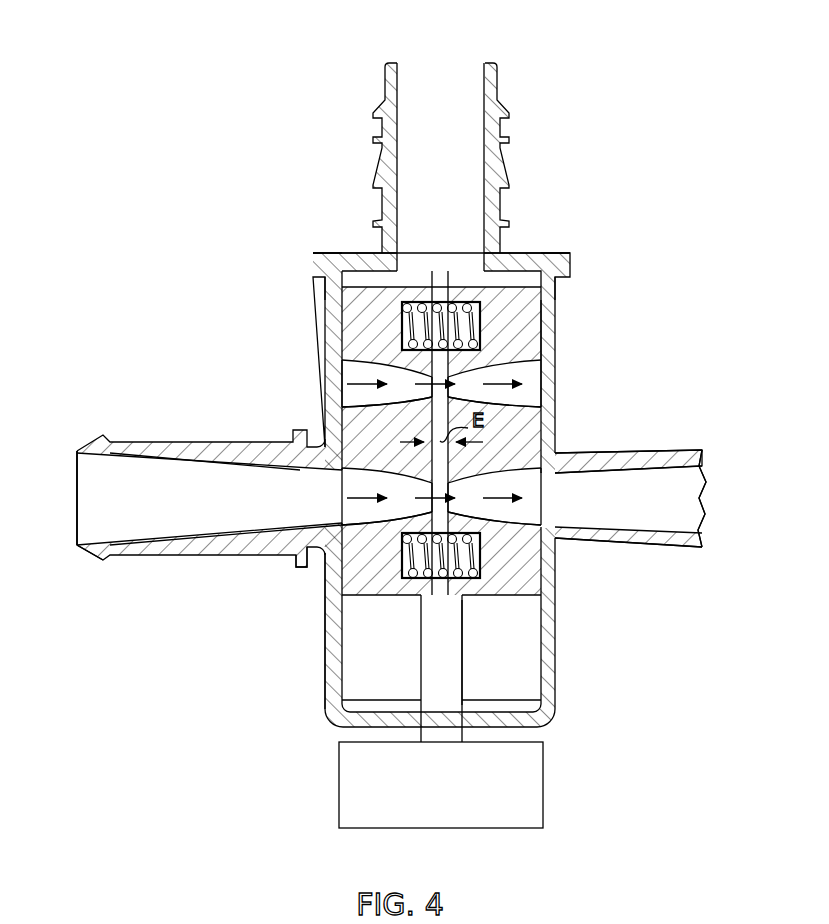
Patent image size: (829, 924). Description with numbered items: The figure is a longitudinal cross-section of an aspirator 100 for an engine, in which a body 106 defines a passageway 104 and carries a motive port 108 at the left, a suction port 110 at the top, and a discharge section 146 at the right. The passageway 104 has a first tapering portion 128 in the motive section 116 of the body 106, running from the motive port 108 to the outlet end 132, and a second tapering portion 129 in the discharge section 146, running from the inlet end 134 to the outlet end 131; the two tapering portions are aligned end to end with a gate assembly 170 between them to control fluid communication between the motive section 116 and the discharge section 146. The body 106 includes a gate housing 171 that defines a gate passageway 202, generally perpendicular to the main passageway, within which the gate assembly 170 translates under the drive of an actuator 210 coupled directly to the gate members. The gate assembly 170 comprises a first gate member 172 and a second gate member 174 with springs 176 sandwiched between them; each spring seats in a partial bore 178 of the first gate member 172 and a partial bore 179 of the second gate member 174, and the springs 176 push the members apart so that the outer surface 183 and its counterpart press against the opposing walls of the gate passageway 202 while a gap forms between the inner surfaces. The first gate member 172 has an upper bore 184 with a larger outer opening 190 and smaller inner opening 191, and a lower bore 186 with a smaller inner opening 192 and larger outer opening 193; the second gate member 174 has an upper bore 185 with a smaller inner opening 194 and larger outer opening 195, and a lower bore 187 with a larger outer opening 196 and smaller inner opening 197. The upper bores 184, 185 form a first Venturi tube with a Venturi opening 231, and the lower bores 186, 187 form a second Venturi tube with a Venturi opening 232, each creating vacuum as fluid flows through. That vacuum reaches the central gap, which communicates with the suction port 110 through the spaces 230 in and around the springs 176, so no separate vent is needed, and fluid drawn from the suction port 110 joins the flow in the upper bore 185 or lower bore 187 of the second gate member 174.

The aspirator 100 is at (275, 168).
The passageway 104 is at (132, 527).
The body 106 is at (126, 447).
The motive port 108 is at (77, 510).
The suction port 110 is at (443, 63).
The motive section 116 is at (172, 424).
The first tapering portion 128 is at (190, 527).
The second tapering portion 129 is at (637, 493).
The outlet end 131 is at (697, 483).
The outlet end 132 is at (302, 555).
The inlet end 134 is at (546, 487).
The discharge section 146 is at (680, 551).
The gate assembly 170 is at (330, 740).
The gate housing 171 is at (332, 695).
The first gate member 172 is at (334, 295).
The second gate member 174 is at (547, 295).
The springs 176 is at (502, 302).
The partial bore 178 is at (406, 318).
The partial bore 179 is at (476, 318).
The outer surface 183 is at (547, 332).
The upper bore 184 is at (357, 395).
The upper bore 185 is at (527, 396).
The lower bore 186 is at (342, 490).
The lower bore 187 is at (497, 508).
The outer opening 190 is at (338, 364).
The inner opening 191 is at (428, 378).
The inner opening 192 is at (430, 483).
The outer opening 193 is at (362, 500).
The inner opening 194 is at (452, 378).
The outer opening 195 is at (548, 364).
The outer opening 196 is at (542, 514).
The inner opening 197 is at (453, 483).
The gate passageway 202 is at (522, 683).
The actuator 210 is at (530, 783).
The spaces 230 is at (441, 297).
The Venturi opening 231 is at (440, 358).
The Venturi opening 232 is at (445, 486).